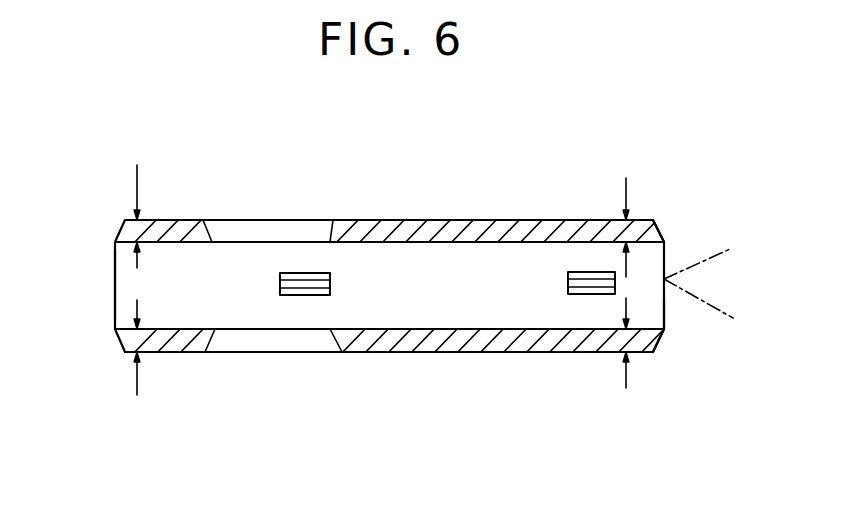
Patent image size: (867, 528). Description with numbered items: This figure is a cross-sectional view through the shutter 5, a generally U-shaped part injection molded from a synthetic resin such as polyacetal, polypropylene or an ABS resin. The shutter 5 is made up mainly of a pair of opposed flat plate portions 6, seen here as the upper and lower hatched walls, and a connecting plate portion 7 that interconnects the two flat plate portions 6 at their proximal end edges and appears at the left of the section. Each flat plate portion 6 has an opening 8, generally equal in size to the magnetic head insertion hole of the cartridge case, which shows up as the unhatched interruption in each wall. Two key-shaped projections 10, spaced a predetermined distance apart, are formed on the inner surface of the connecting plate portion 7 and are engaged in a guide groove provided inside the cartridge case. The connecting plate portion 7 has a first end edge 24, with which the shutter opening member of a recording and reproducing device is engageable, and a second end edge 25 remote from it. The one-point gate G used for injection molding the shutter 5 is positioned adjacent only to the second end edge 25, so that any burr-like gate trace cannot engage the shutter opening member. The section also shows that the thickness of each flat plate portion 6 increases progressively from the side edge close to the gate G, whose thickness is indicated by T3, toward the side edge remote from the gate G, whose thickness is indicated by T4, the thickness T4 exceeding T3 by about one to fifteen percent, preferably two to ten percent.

The shutter 5 is at (637, 175).
The flat plate portion 6 is at (466, 219).
The connecting plate portion 7 is at (518, 310).
The opening 8 is at (268, 232).
The key-shaped projection 10 is at (330, 285).
The first end edge 24 is at (114, 277).
The second end edge 25 is at (665, 303).
The gate G is at (710, 268).
The thickness T3 is at (638, 232).
The thickness T4 is at (135, 228).